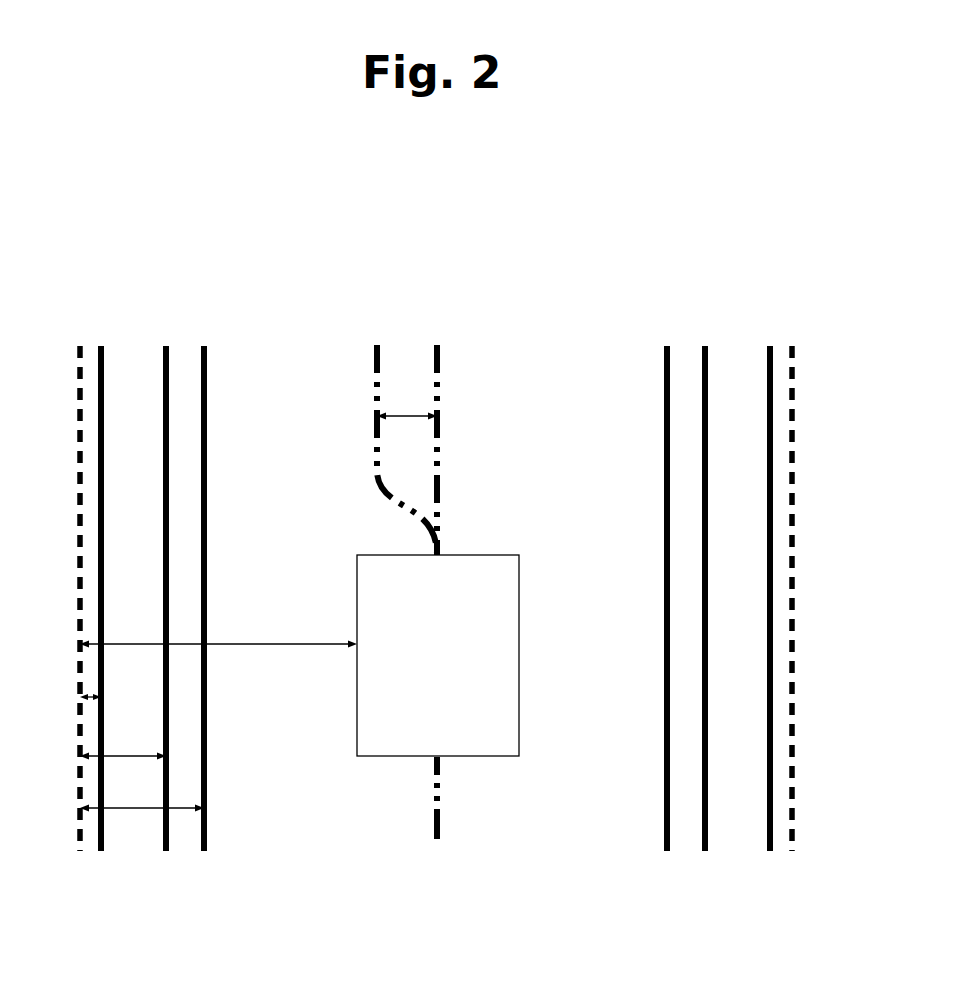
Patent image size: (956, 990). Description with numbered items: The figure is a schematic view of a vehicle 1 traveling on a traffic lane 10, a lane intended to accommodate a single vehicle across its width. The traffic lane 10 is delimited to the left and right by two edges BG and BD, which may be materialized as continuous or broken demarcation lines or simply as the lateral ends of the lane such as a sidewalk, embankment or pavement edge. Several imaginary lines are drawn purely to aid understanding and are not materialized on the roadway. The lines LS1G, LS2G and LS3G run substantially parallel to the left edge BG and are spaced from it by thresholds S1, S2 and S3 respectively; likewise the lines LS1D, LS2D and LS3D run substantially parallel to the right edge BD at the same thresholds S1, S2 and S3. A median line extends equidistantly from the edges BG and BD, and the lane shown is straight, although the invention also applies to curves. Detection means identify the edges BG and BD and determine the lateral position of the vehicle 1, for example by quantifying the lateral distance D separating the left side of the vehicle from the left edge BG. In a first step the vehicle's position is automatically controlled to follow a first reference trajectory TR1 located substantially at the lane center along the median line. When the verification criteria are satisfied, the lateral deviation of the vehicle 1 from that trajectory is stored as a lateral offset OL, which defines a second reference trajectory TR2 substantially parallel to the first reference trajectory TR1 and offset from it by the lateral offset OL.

The traffic lane 10 is at (570, 266).
The vehicle 1 is at (488, 538).
The left edge BG is at (82, 395).
The first left imaginary line LS1G is at (168, 392).
The second left imaginary line LS2G is at (103, 408).
The third left imaginary line LS3G is at (206, 433).
The right edge BD is at (790, 375).
The first right imaginary line LS1D is at (703, 370).
The second right imaginary line LS2D is at (768, 390).
The third right imaginary line LS3D is at (665, 415).
The first reference trajectory TR1 is at (478, 593).
The second reference trajectory TR2 is at (376, 440).
The lateral offset OL is at (407, 406).
The lateral distance D is at (218, 636).
The first threshold S1 is at (123, 769).
The second threshold S2 is at (105, 708).
The third threshold S3 is at (142, 820).